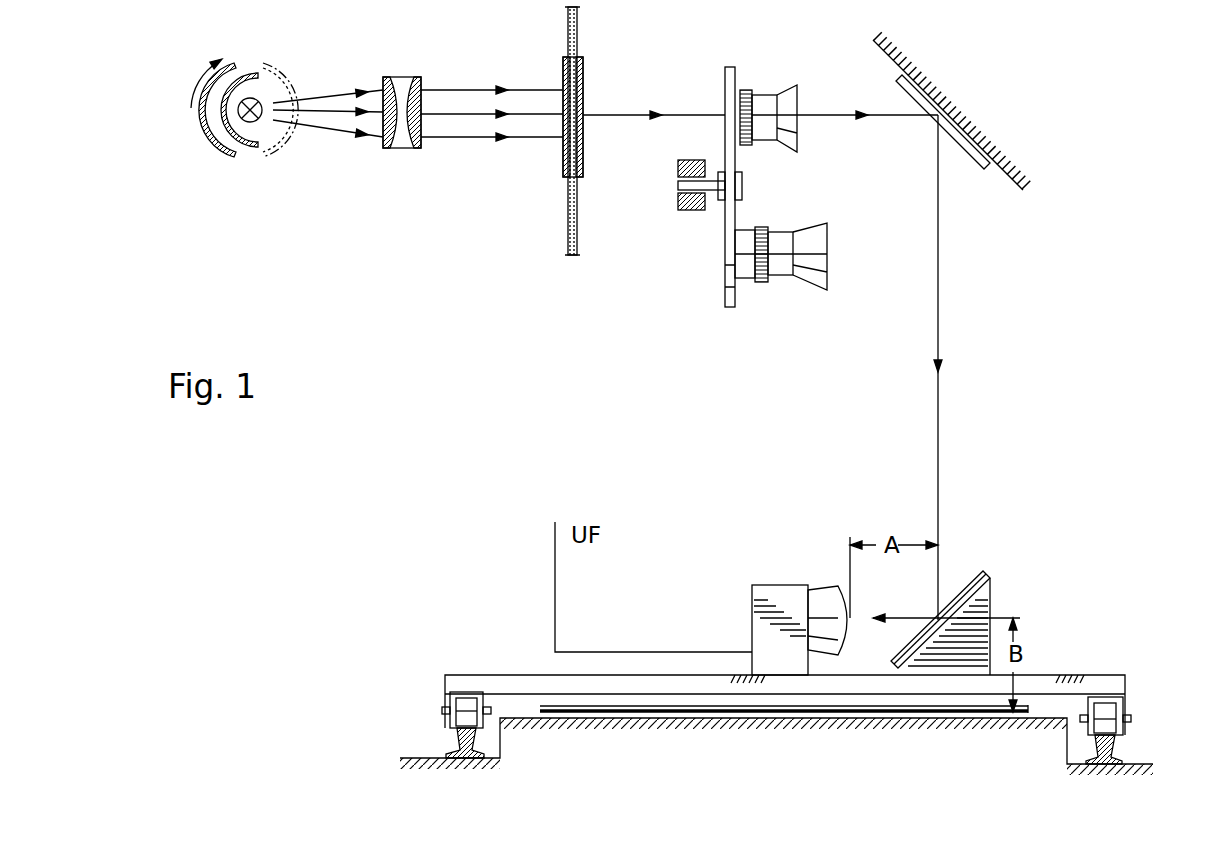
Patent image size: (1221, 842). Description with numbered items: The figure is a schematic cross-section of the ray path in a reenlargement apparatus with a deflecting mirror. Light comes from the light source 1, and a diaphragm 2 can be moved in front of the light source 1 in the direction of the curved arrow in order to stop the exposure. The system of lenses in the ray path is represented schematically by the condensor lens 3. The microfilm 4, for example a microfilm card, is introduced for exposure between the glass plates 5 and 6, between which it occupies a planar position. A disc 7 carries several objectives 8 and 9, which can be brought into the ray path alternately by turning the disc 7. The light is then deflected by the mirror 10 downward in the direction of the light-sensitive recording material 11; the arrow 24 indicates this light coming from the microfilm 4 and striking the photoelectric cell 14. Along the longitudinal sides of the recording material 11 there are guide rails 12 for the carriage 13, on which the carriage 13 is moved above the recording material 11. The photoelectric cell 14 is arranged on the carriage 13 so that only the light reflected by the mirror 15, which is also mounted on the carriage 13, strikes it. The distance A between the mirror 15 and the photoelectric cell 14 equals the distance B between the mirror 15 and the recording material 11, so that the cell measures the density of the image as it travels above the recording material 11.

The light source 1 is at (260, 100).
The diaphragm 2 is at (212, 141).
The condensor lens 3 is at (402, 152).
The microfilm 4 is at (578, 205).
The glass plate 5 is at (563, 70).
The glass plate 6 is at (584, 70).
The disc 7 is at (736, 78).
The objective 8 is at (765, 100).
The objective 9 is at (781, 278).
The mirror 10 is at (901, 81).
The light-sensitive recording material 11 is at (691, 714).
The guide rails 12 is at (455, 752).
The carriage 13 is at (1102, 684).
The photoelectric cell 14 is at (783, 594).
The mirror 15 is at (966, 594).
The arrow 24 is at (941, 322).